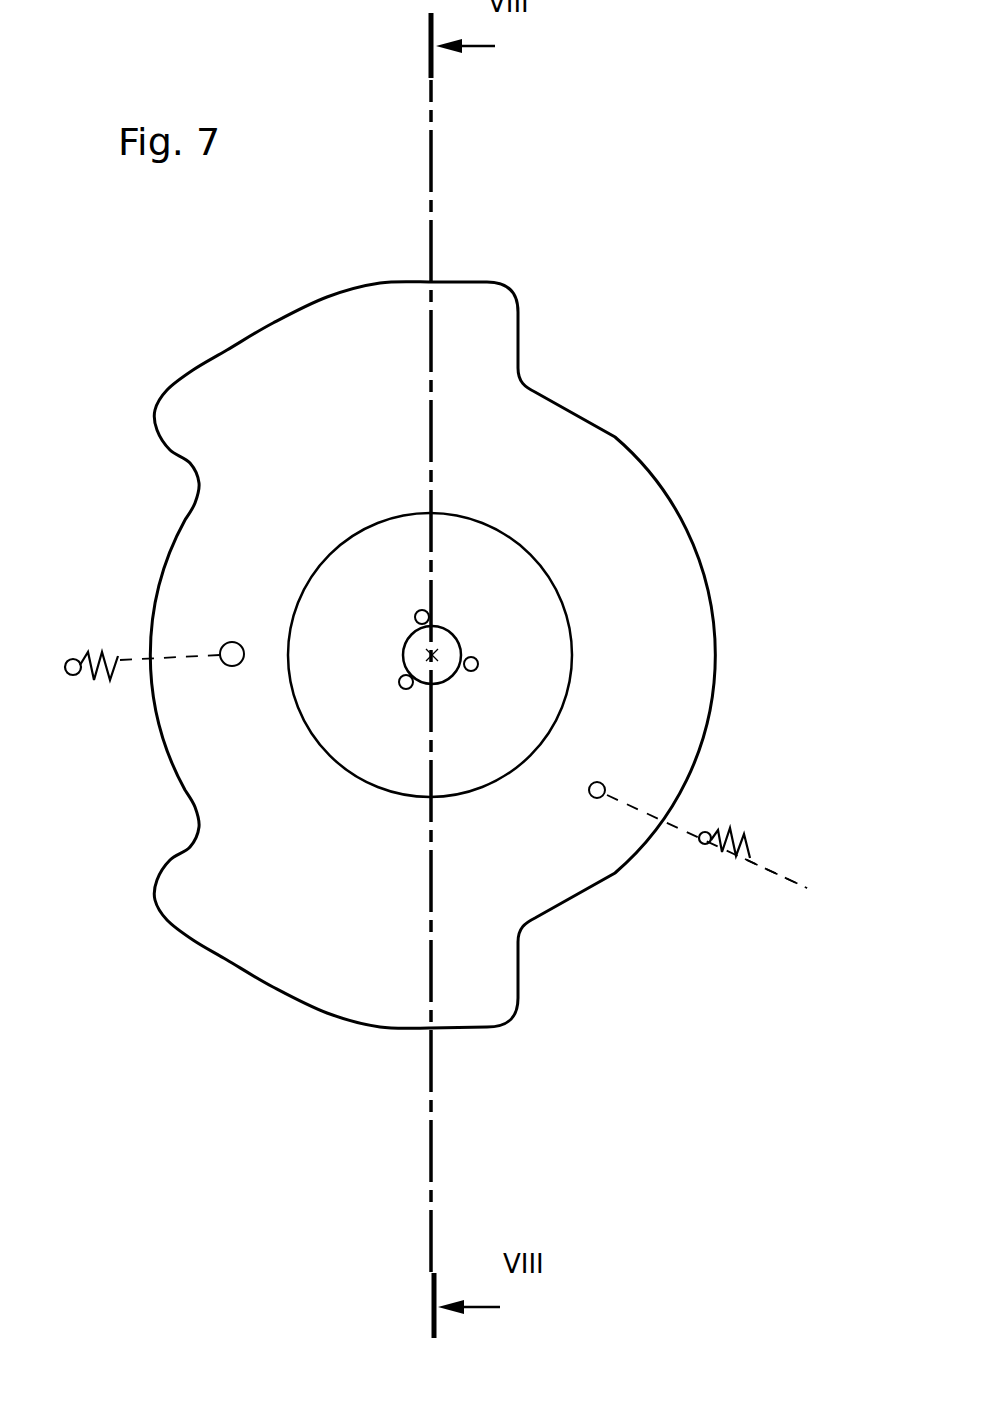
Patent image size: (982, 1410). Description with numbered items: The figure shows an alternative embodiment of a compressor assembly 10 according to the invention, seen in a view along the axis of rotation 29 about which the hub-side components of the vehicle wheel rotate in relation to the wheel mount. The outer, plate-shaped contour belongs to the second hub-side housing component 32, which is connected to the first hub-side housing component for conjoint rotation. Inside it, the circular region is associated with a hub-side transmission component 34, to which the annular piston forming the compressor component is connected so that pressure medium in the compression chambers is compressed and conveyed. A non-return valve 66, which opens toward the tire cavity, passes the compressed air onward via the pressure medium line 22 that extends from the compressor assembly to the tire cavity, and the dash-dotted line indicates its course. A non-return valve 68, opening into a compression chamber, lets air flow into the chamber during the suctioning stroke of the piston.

The compressor assembly 10 is at (628, 290).
The pressure medium line 22 is at (770, 868).
The axis of rotation 29 is at (443, 655).
The second hub-side housing component 32 is at (652, 528).
The hub-side transmission component 34 is at (547, 677).
The non-return valve 66 is at (722, 832).
The non-return valve 68 is at (83, 663).